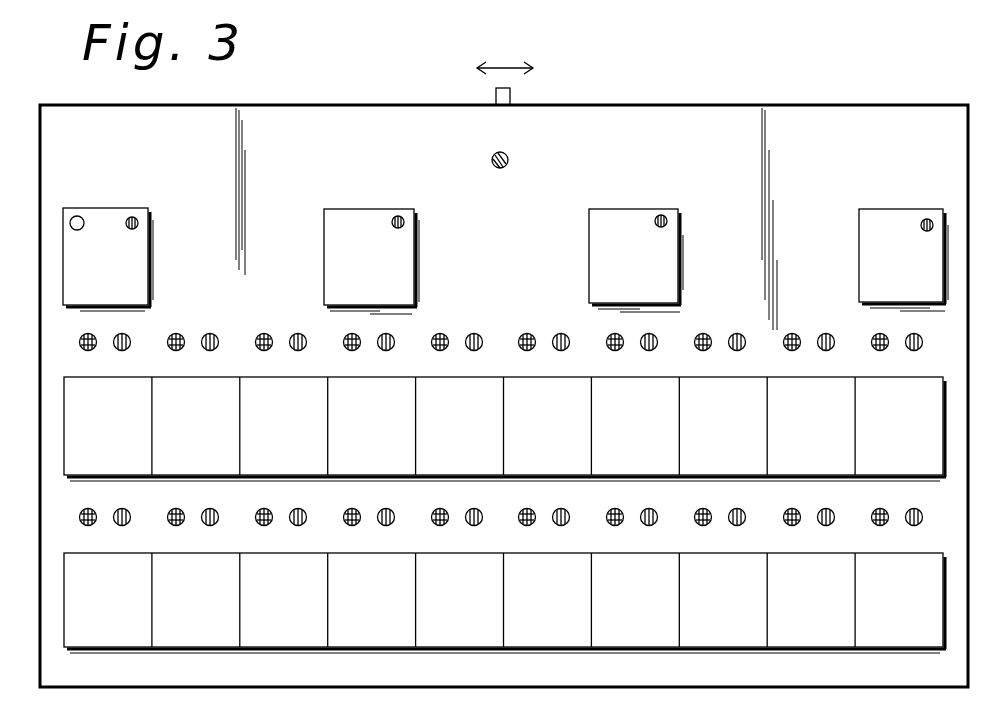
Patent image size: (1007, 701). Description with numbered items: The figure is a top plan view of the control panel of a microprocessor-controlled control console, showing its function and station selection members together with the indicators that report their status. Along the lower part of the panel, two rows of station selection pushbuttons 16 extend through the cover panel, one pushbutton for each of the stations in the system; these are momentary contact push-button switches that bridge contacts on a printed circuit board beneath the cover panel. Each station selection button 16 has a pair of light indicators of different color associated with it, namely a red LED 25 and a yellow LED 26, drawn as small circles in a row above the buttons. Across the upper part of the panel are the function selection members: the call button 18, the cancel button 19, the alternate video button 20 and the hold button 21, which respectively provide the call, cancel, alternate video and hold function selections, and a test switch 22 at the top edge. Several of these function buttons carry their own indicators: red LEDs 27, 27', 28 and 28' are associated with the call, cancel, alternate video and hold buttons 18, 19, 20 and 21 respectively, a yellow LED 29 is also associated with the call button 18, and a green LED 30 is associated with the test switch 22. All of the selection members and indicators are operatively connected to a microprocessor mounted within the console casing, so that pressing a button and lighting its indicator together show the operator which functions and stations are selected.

The station selection pushbutton 16 is at (83, 467).
The call button 18 is at (148, 221).
The cancel button 19 is at (369, 209).
The alternate video button 20 is at (627, 210).
The hold button 21 is at (904, 216).
The test switch 22 is at (510, 95).
The red LED 25 is at (128, 336).
The yellow LED 26 is at (80, 338).
The red LED 27 is at (156, 237).
The red LED 27' is at (428, 235).
The red LED 28 is at (689, 230).
The red LED 28' is at (908, 190).
The yellow LED 29 is at (75, 216).
The green LED 30 is at (509, 163).